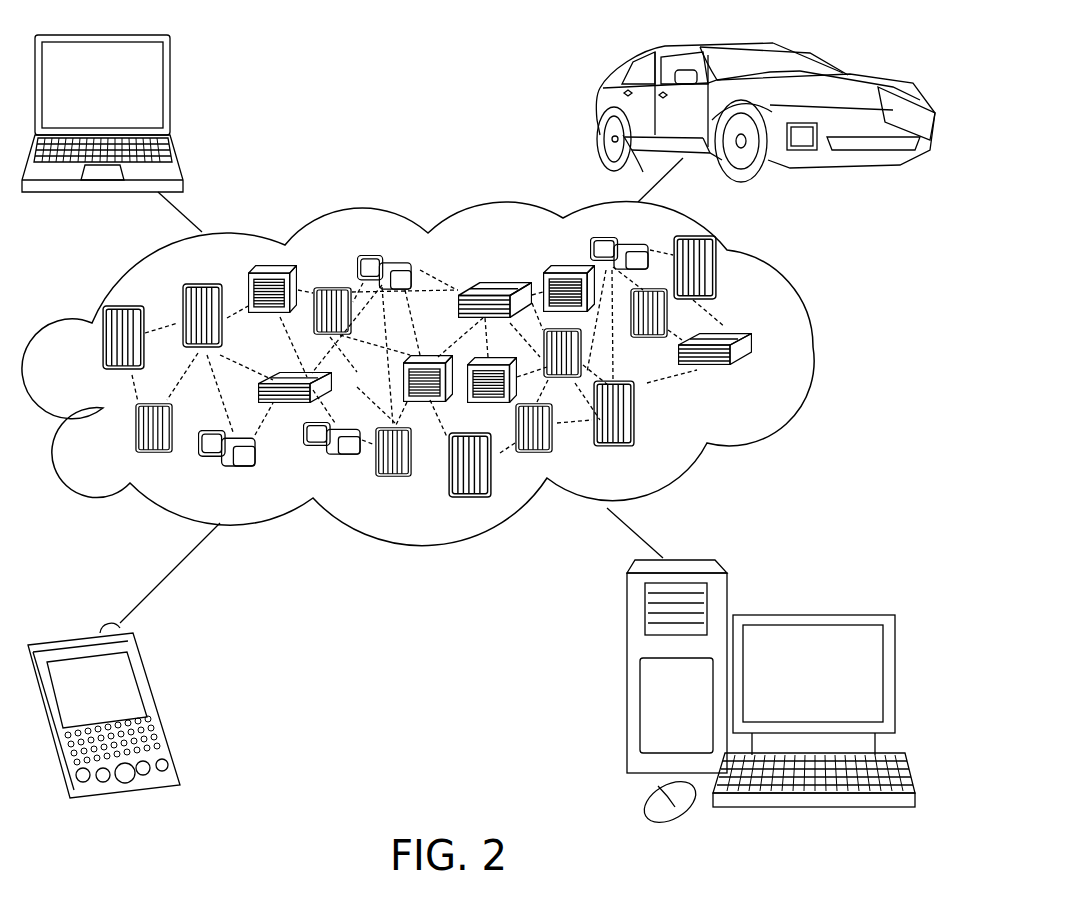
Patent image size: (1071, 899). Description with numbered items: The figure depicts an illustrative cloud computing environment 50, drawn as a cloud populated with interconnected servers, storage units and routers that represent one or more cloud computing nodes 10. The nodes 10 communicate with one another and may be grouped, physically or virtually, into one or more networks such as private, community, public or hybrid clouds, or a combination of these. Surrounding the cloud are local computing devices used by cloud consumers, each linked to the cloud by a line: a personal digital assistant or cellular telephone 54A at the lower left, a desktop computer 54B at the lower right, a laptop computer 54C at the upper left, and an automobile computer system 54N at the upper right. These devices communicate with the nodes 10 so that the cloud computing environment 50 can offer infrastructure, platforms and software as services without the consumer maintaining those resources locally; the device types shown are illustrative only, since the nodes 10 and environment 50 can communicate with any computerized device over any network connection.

The cloud computing node 10 is at (833, 337).
The cloud computing environment 50 is at (446, 373).
The personal digital assistant (PDA) or cellular telephone 54A is at (157, 702).
The desktop computer 54B is at (810, 615).
The laptop computer 54C is at (170, 92).
The automobile computer system 54N is at (596, 108).